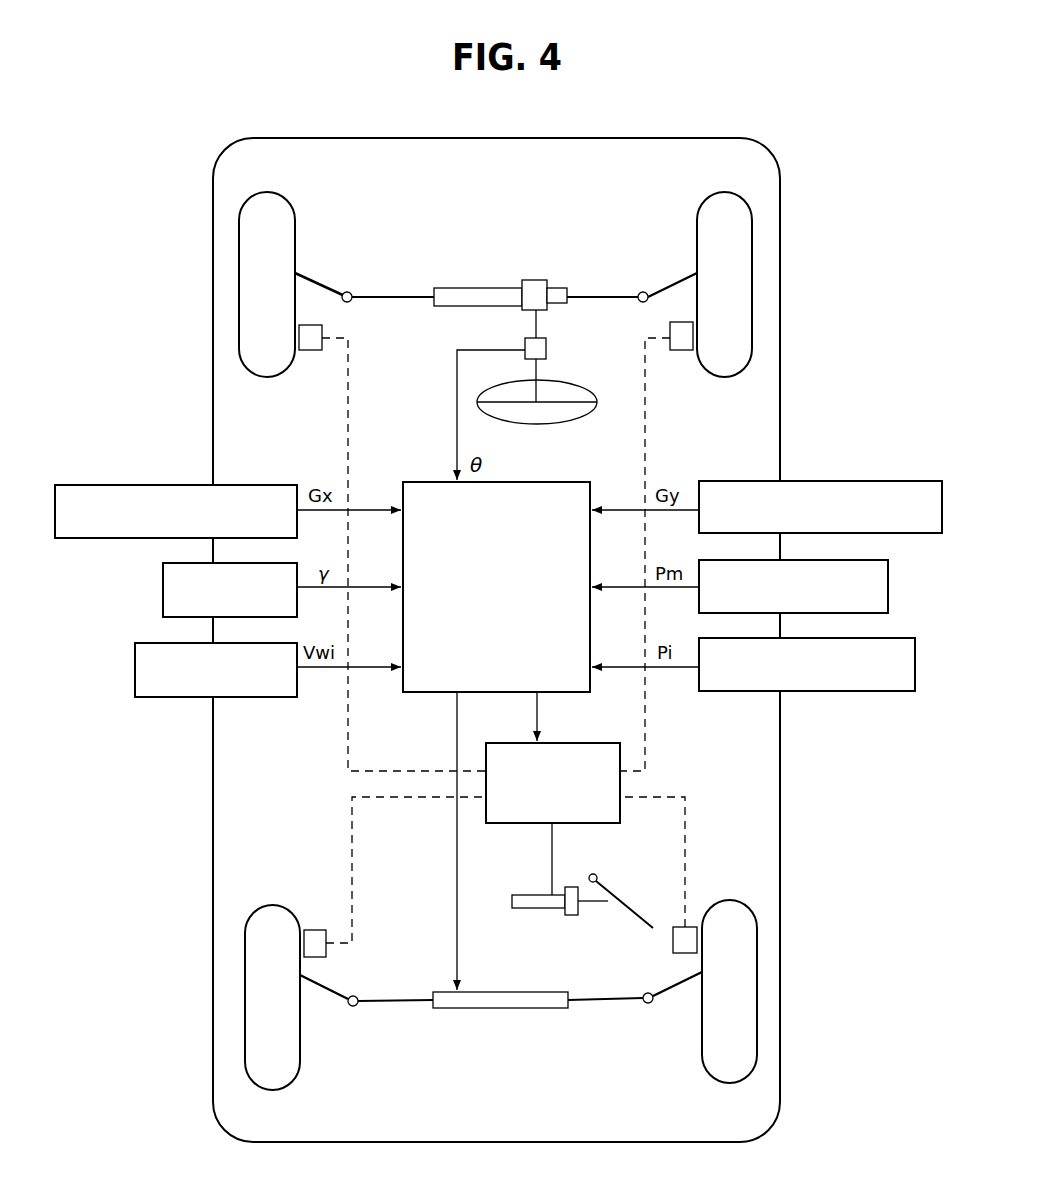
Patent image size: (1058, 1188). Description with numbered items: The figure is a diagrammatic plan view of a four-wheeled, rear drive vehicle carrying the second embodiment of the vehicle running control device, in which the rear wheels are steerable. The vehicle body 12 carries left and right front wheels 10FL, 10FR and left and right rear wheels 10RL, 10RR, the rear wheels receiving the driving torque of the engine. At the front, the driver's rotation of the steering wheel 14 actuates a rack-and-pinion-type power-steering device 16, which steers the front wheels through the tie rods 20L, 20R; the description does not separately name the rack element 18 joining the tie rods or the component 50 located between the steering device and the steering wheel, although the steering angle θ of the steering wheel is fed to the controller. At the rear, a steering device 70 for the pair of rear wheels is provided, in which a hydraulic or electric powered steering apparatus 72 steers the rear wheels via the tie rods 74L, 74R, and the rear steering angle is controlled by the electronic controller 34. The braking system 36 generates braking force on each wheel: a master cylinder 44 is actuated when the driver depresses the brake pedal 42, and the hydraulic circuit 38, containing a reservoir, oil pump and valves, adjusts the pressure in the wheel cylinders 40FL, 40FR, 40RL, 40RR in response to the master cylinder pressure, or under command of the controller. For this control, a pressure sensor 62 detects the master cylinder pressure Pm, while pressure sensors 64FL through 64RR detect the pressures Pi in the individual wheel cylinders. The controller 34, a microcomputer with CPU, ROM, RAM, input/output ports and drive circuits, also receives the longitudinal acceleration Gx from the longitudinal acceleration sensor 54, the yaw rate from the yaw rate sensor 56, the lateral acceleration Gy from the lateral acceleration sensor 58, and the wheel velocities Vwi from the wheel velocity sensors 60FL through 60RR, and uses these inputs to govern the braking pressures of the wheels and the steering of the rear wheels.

The left front wheel 10FL is at (239, 297).
The right front wheel 10FR is at (752, 297).
The left rear wheel 10RL is at (245, 999).
The right rear wheel 10RR is at (757, 996).
The vehicle body 12 is at (780, 427).
The steering wheel 14 is at (563, 424).
The steering device 16 is at (527, 270).
The rack bar / tie rod 18 is at (378, 302).
The left tie rod 20L is at (313, 283).
The right tie rod 20R is at (680, 282).
The electronic controller 34 is at (496, 587).
The braking system 36 is at (574, 874).
The hydraulic circuit 38 is at (553, 783).
The front left wheel cylinder 40FL is at (312, 352).
The front right wheel cylinder 40FR is at (683, 350).
The rear left wheel cylinder 40RL is at (315, 930).
The rear right wheel cylinder 40RR is at (673, 943).
The brake pedal 42 is at (628, 906).
The master cylinder 44 is at (532, 893).
The steering angle sensor 50 is at (548, 350).
The longitudinal acceleration sensor 54 is at (242, 483).
The yaw rate sensor 56 is at (727, 480).
The lateral acceleration sensor 58 is at (163, 602).
The wheel velocity sensor 60FL is at (262, 697).
The wheel velocity sensor 60RR is at (223, 714).
The pressure sensor 62 is at (888, 600).
The pressure sensor 64FL is at (725, 691).
The pressure sensor 64RR is at (807, 710).
The steering device 70 is at (501, 1002).
The powered steering apparatus 72 is at (510, 1008).
The left tie rod 74L is at (345, 1008).
The right tie rod 74R is at (660, 1004).